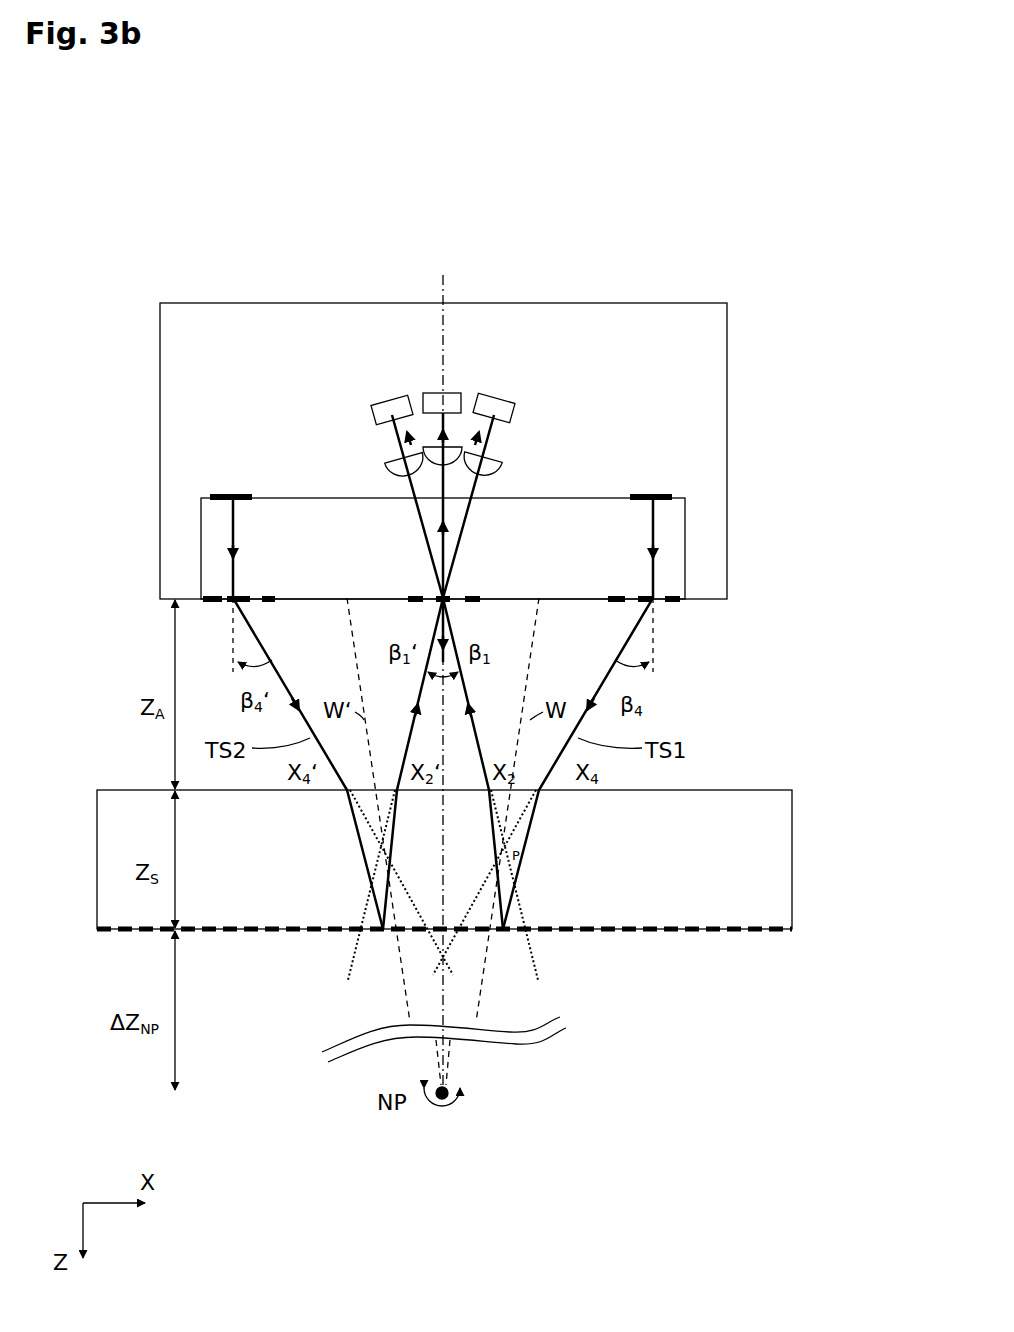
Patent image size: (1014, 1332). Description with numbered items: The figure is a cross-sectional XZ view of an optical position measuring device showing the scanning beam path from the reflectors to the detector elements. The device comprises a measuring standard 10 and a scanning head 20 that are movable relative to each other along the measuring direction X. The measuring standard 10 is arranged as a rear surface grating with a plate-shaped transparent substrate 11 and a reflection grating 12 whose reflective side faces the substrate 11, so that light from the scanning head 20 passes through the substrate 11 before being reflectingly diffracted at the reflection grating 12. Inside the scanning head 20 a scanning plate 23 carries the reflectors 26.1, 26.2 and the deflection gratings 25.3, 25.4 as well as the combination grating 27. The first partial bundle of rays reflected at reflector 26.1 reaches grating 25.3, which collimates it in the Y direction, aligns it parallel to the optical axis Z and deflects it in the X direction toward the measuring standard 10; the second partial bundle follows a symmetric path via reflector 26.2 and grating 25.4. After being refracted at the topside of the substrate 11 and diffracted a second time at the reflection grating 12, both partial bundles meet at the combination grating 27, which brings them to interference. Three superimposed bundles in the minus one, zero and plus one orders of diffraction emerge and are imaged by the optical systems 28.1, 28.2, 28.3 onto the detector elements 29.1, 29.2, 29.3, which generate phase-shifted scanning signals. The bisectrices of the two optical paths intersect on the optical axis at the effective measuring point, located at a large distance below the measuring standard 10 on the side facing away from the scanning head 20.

The measuring standard 10 is at (445, 887).
The substrate 11 is at (778, 866).
The reflection grating 12 is at (710, 932).
The scanning head 20 is at (153, 435).
The scanning plate 23 is at (673, 529).
The grating 25.3 is at (615, 596).
The grating 25.4 is at (272, 596).
The reflector 26.1 is at (651, 495).
The reflector 26.2 is at (232, 495).
The combination grating 27 is at (471, 596).
The optical system 28.1 is at (501, 462).
The optical system 28.2 is at (463, 447).
The optical system 28.3 is at (385, 462).
The detector element 29.1 is at (500, 404).
The detector element 29.2 is at (451, 395).
The detector element 29.3 is at (388, 405).